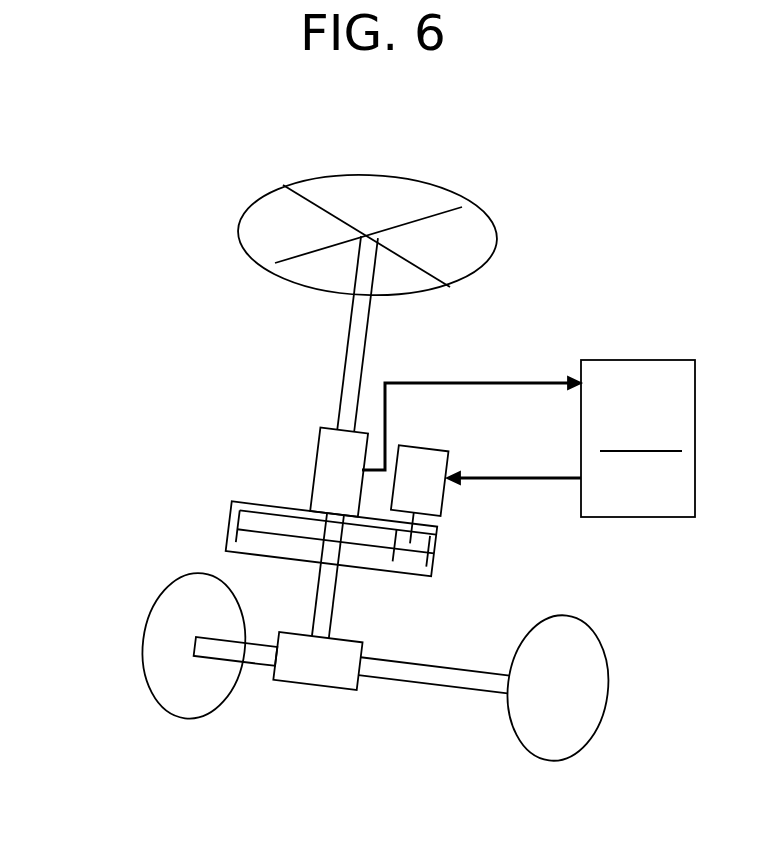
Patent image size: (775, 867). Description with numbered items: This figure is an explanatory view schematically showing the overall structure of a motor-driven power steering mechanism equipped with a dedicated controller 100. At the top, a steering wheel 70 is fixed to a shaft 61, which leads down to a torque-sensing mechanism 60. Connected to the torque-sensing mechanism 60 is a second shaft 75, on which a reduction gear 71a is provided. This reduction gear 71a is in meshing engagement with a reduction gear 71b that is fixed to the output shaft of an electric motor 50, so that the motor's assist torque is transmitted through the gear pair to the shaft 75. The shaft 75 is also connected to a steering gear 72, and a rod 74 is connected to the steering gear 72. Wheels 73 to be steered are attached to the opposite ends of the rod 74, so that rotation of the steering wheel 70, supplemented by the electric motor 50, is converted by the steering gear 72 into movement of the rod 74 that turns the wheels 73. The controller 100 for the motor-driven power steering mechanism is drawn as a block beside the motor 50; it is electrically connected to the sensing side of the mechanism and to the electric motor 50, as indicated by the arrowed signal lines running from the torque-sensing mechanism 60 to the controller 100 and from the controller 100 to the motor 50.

The steering wheel 70 is at (500, 242).
The shaft 61 is at (348, 347).
The torque-sensing mechanism 60 is at (318, 445).
The electric motor 50 is at (428, 447).
The controller 100 is at (528, 438).
The reduction gear 71a is at (232, 508).
The reduction gear 71b is at (435, 556).
The shaft 75 is at (335, 602).
The steering gear 72 is at (317, 689).
The rod 74 is at (430, 687).
The wheels 73 is at (222, 707).